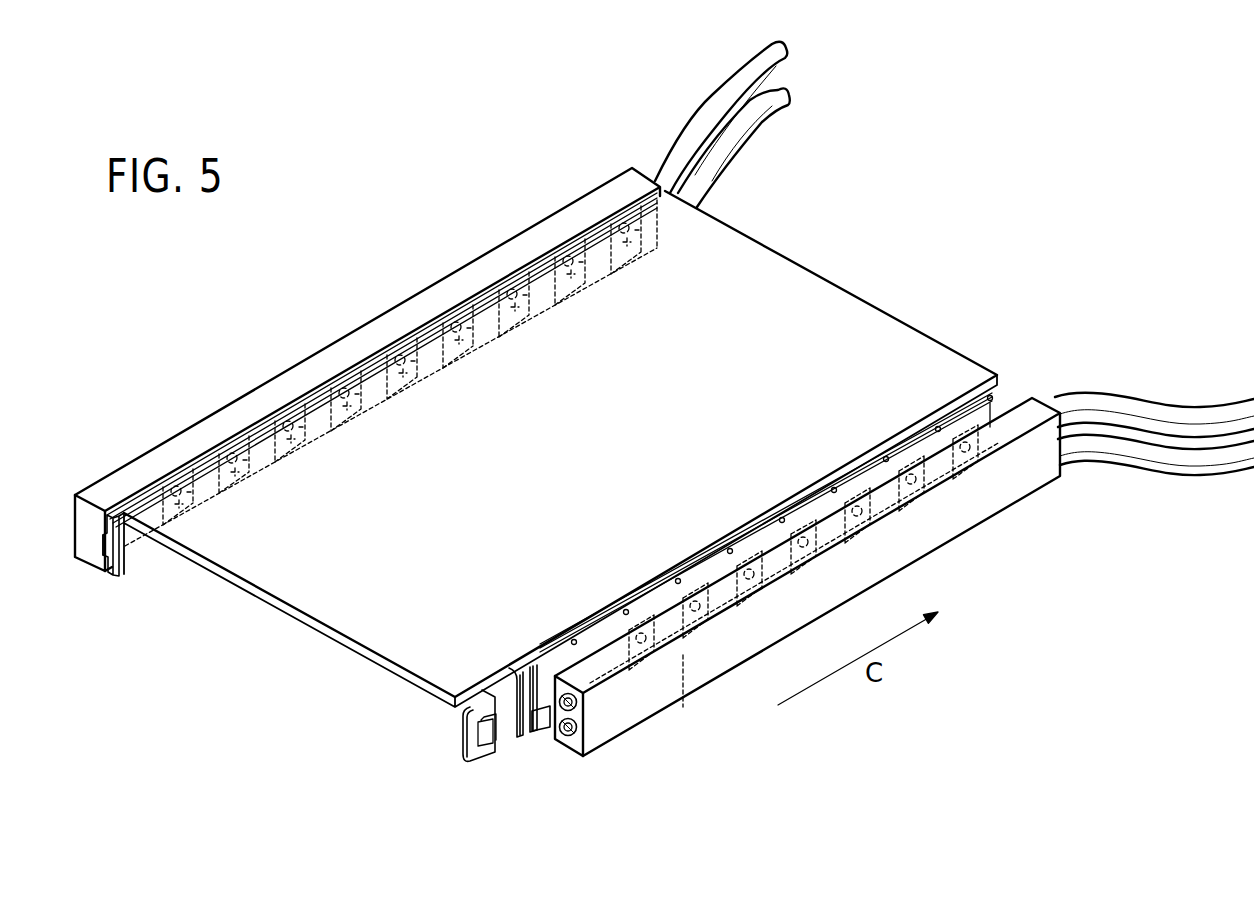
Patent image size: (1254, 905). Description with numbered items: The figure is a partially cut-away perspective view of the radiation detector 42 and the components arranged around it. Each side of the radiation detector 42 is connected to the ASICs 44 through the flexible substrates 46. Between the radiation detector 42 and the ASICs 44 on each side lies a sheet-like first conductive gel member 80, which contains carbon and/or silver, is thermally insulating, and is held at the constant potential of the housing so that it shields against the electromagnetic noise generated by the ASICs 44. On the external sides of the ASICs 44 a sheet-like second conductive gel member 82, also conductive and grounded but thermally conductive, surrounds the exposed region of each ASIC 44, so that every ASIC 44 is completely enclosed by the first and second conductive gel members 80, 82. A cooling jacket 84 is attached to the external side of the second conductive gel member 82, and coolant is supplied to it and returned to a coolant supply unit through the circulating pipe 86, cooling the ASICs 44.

The radiation detector 42 is at (338, 588).
The ASICs 44 is at (495, 776).
The flexible substrates 46 is at (632, 660).
The first conductive gel member 80 is at (158, 546).
The second conductive gel member 82 is at (124, 578).
The cooling jacket 84 is at (118, 479).
The circulating pipe 86 is at (723, 140).